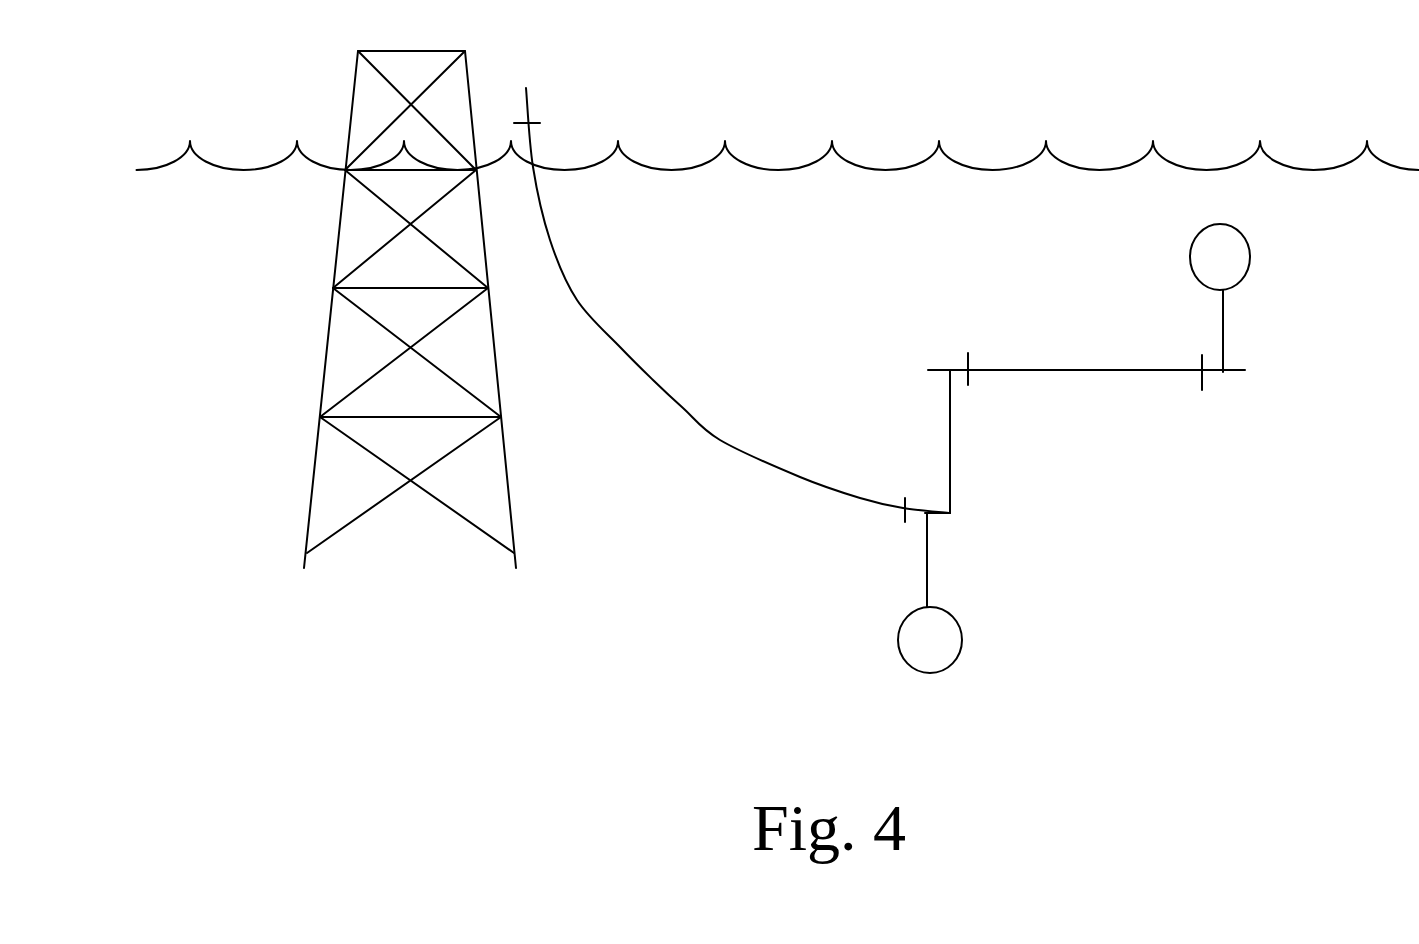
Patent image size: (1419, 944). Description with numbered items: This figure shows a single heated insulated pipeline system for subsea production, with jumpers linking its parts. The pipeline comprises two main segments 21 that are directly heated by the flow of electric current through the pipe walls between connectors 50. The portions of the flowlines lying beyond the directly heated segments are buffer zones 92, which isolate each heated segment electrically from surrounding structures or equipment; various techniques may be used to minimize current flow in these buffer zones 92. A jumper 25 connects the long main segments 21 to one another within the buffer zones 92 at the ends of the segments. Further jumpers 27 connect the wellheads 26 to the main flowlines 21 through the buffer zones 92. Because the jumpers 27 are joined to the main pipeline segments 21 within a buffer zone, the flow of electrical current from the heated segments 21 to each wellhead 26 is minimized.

The main segment 21 is at (682, 408).
The jumper 25 is at (952, 445).
The wellhead 26 is at (922, 642).
The jumper 27 is at (928, 562).
The connector 50 is at (545, 122).
The buffer zone 92 is at (945, 505).